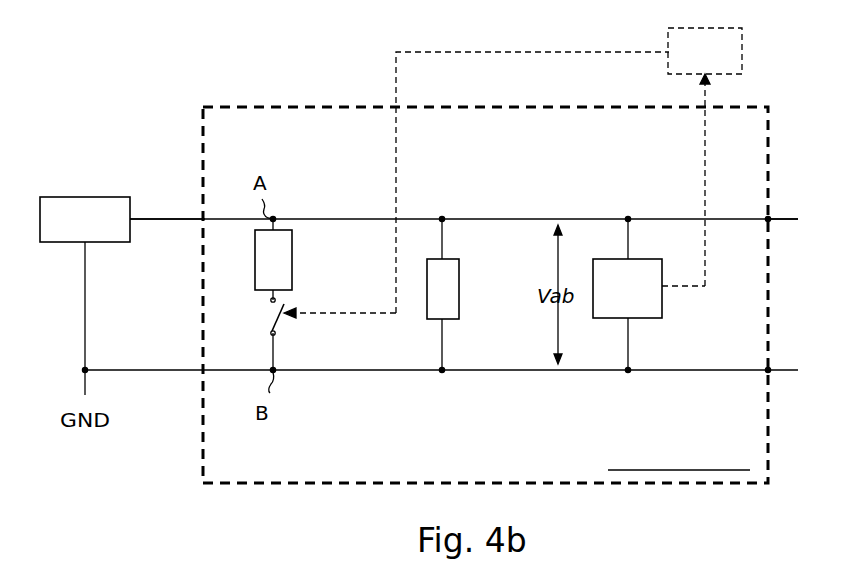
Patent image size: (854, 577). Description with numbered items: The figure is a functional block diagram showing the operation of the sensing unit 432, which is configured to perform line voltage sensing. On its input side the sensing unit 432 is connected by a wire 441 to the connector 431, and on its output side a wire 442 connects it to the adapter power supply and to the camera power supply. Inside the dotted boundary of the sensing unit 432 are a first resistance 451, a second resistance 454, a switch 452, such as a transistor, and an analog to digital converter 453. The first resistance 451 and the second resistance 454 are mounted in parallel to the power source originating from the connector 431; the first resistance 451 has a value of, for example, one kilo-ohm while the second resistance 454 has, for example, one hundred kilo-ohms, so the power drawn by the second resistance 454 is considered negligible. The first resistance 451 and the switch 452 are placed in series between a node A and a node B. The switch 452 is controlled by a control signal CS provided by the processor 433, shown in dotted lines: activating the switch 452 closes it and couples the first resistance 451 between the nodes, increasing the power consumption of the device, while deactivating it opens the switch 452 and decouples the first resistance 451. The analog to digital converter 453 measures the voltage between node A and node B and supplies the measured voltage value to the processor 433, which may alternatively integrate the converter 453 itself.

The connector 431 is at (85, 197).
The wire 441 is at (159, 217).
The wire 442 is at (785, 219).
The sensing unit 432 is at (222, 107).
The processor 433 is at (569, 170).
The first resistance 451 is at (292, 261).
The switch 452 is at (286, 313).
The second resistance 454 is at (459, 288).
The analog to digital converter 453 is at (644, 320).